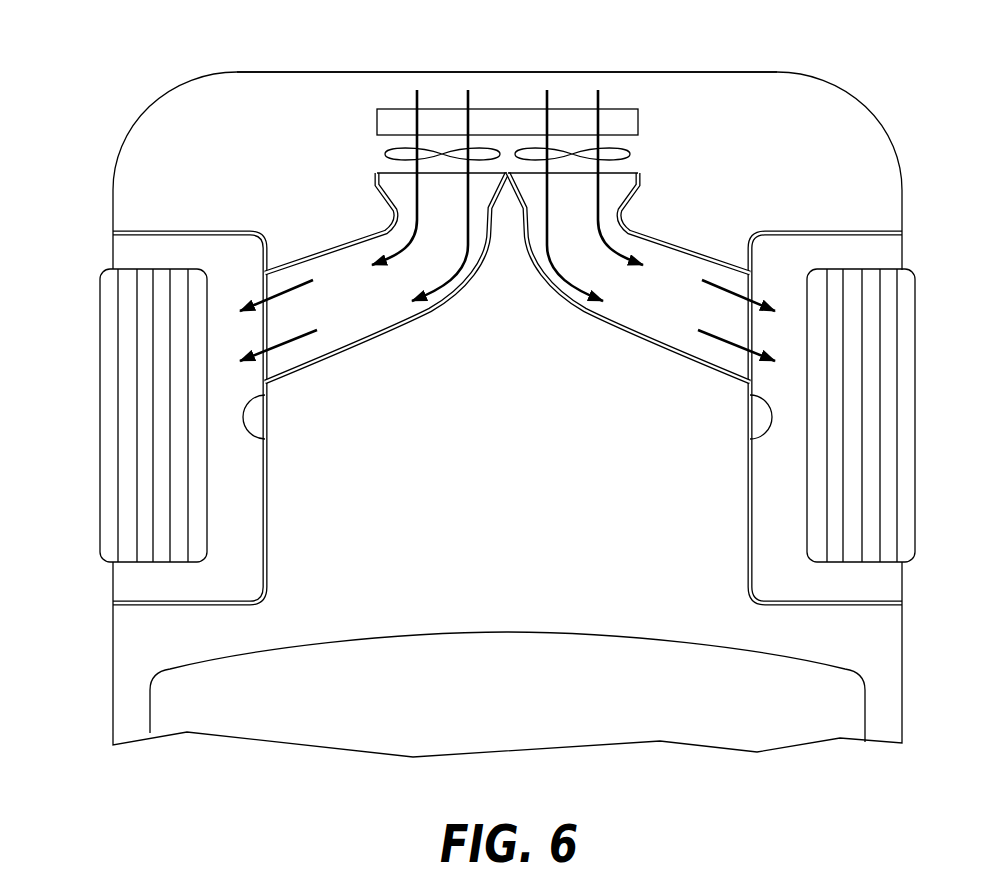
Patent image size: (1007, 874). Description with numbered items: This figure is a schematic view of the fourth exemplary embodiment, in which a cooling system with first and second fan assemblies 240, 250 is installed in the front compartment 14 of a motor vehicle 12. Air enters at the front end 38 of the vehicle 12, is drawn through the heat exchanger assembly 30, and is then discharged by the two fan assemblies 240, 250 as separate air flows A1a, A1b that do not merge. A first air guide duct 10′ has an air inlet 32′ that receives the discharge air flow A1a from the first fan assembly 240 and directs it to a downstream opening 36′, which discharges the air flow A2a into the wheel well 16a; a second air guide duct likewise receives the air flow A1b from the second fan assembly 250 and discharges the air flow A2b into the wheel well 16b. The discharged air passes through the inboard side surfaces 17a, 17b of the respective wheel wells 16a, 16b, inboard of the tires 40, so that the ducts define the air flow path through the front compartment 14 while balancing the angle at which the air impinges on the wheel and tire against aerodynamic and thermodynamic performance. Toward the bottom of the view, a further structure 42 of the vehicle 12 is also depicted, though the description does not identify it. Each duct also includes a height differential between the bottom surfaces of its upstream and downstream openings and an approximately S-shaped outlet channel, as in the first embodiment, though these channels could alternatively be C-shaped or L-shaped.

The motor vehicle 12 is at (849, 62).
The front compartment 14 is at (517, 530).
The wheel well 16a is at (138, 584).
The wheel well 16b is at (882, 583).
The inboard side surface 17a is at (263, 441).
The inboard side surface 17b is at (752, 438).
The heat exchanger assembly 30 is at (640, 123).
The air inlet 32′ is at (395, 188).
The downstream outlet opening 36′ is at (280, 266).
The front end 38 is at (338, 72).
The tire 40 is at (130, 348).
The bumper 42 is at (690, 722).
The first fan assembly 240 is at (628, 153).
The second fan assembly 250 is at (387, 153).
The first air guide duct 10′ is at (440, 313).
The air flow A1a is at (423, 195).
The air flow A1b is at (595, 195).
The air flow A2a is at (278, 320).
The air flow A2b is at (736, 320).